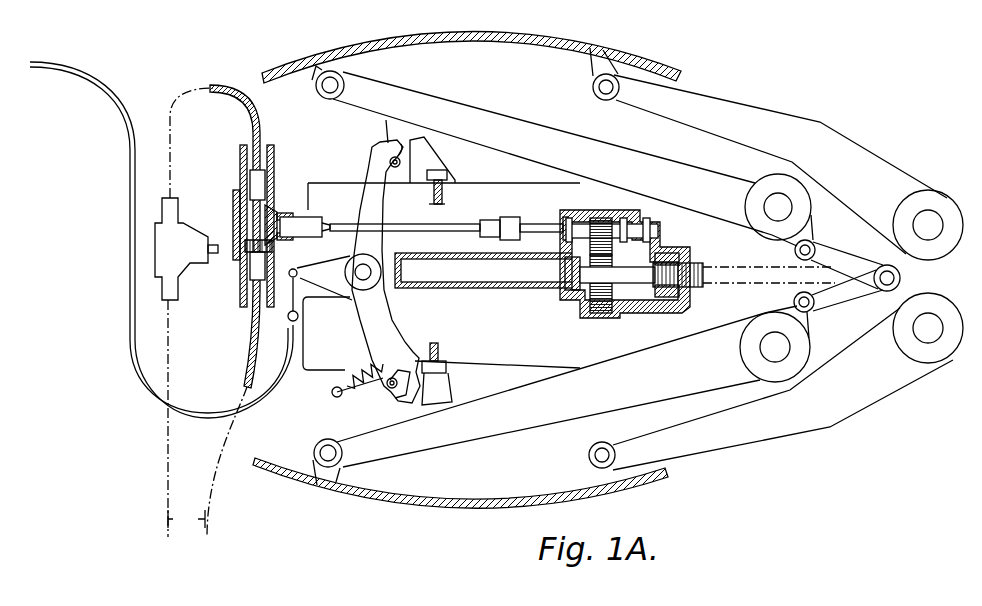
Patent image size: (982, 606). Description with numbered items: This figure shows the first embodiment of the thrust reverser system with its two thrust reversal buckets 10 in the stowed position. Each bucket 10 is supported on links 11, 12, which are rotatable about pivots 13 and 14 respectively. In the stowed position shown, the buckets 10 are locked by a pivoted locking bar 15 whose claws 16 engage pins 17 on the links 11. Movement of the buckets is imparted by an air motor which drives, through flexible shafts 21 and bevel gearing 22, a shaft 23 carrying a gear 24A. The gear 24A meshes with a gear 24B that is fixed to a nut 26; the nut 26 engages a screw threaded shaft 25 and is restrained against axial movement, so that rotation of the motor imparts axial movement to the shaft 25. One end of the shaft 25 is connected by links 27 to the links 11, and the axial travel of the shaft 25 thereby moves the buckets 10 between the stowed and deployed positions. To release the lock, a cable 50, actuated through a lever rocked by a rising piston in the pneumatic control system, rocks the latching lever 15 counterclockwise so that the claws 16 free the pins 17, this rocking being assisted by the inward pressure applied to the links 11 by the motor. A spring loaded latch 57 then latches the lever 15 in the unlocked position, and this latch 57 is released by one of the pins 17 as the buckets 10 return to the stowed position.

The thrust reversal bucket 10 is at (554, 44).
The link 11 is at (528, 126).
The link 12 is at (827, 133).
The pivot 13 is at (778, 208).
The pivot 14 is at (931, 226).
The pivoted locking bar 15 is at (357, 313).
The claw 16 is at (380, 147).
The pin 17 is at (398, 165).
The flexible shaft 21 is at (240, 101).
The bevel gearing 22 is at (270, 203).
The shaft 23 is at (470, 224).
The gear 24A is at (602, 220).
The gear 24B is at (598, 313).
The screw threaded shaft 25 is at (698, 267).
The nut 26 is at (697, 287).
The link 27 is at (835, 252).
The cable 50 is at (95, 86).
The spring loaded latch 57 is at (392, 357).